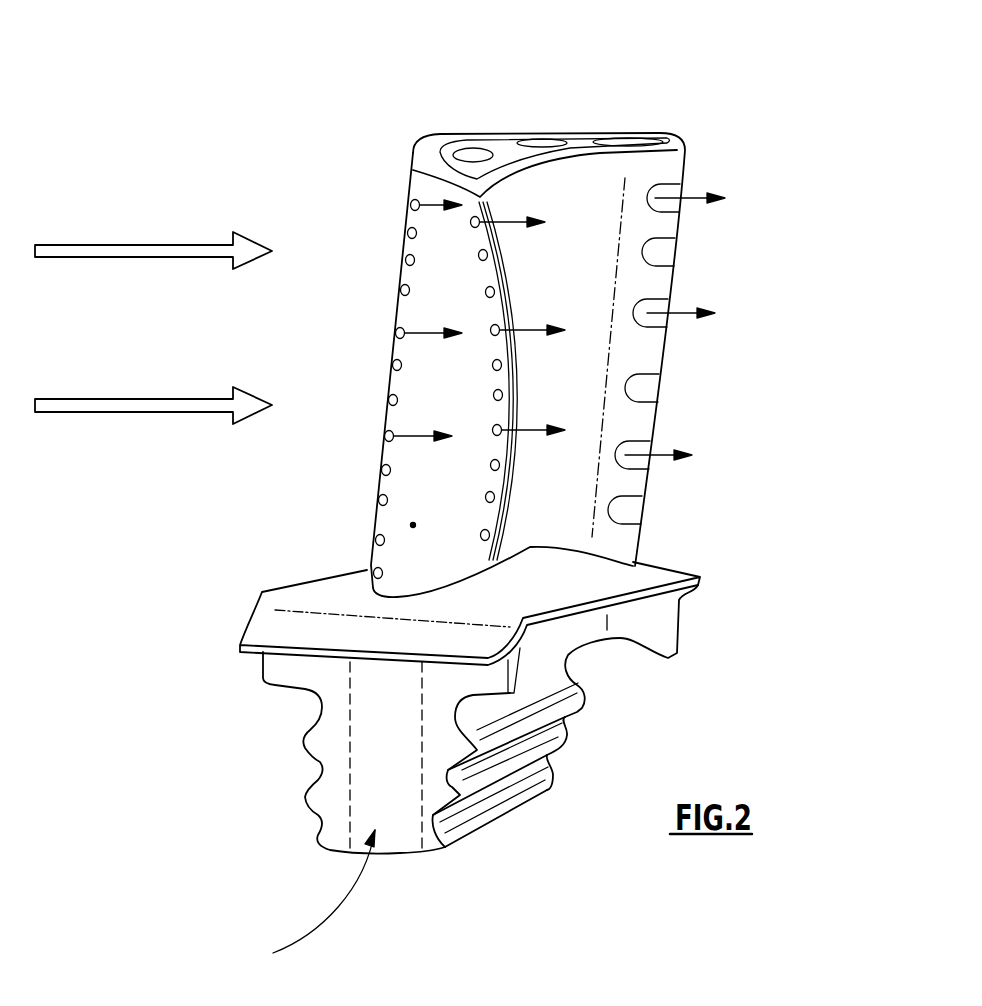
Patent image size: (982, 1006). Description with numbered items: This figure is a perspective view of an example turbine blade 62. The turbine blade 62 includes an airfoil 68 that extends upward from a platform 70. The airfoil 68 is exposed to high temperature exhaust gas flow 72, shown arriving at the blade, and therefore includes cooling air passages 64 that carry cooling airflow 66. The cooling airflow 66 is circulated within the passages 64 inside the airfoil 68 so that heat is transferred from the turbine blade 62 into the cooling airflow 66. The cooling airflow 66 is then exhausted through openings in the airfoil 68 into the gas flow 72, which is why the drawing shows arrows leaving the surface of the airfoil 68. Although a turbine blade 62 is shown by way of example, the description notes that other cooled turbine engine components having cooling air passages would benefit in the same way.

The turbine blade 62 is at (750, 100).
The cooling air passages 64 is at (540, 142).
The cooling airflow 66 is at (433, 205).
The airfoil 68 is at (413, 525).
The platform 70 is at (317, 602).
The exhaust gas flow 72 is at (178, 251).